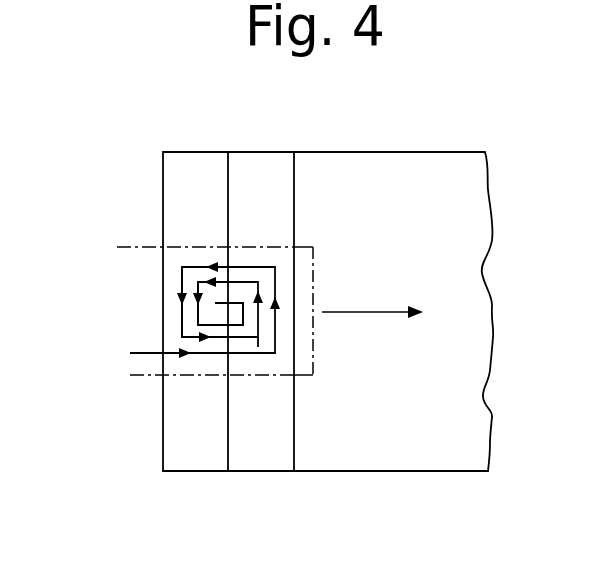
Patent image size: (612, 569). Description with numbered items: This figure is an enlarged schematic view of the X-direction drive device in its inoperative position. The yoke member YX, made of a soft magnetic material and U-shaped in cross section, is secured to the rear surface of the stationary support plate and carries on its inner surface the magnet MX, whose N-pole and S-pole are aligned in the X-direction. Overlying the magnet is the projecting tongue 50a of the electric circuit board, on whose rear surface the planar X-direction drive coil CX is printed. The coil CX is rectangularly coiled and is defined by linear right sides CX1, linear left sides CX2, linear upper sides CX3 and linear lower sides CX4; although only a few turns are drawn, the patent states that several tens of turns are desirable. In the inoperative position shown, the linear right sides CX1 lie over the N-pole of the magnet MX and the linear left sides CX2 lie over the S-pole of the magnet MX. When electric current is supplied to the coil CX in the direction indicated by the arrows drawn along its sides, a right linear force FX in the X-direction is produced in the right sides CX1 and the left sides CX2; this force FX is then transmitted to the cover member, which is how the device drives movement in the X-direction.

The X-direction drive coil CX is at (140, 240).
The linear right sides CX1 is at (258, 347).
The linear left sides CX2 is at (198, 288).
The linear upper sides CX3 is at (250, 281).
The linear lower sides CX4 is at (243, 353).
The projecting tongue 50a is at (313, 250).
The right linear force FX is at (394, 312).
The magnet MX is at (262, 458).
The yoke member YX is at (367, 450).